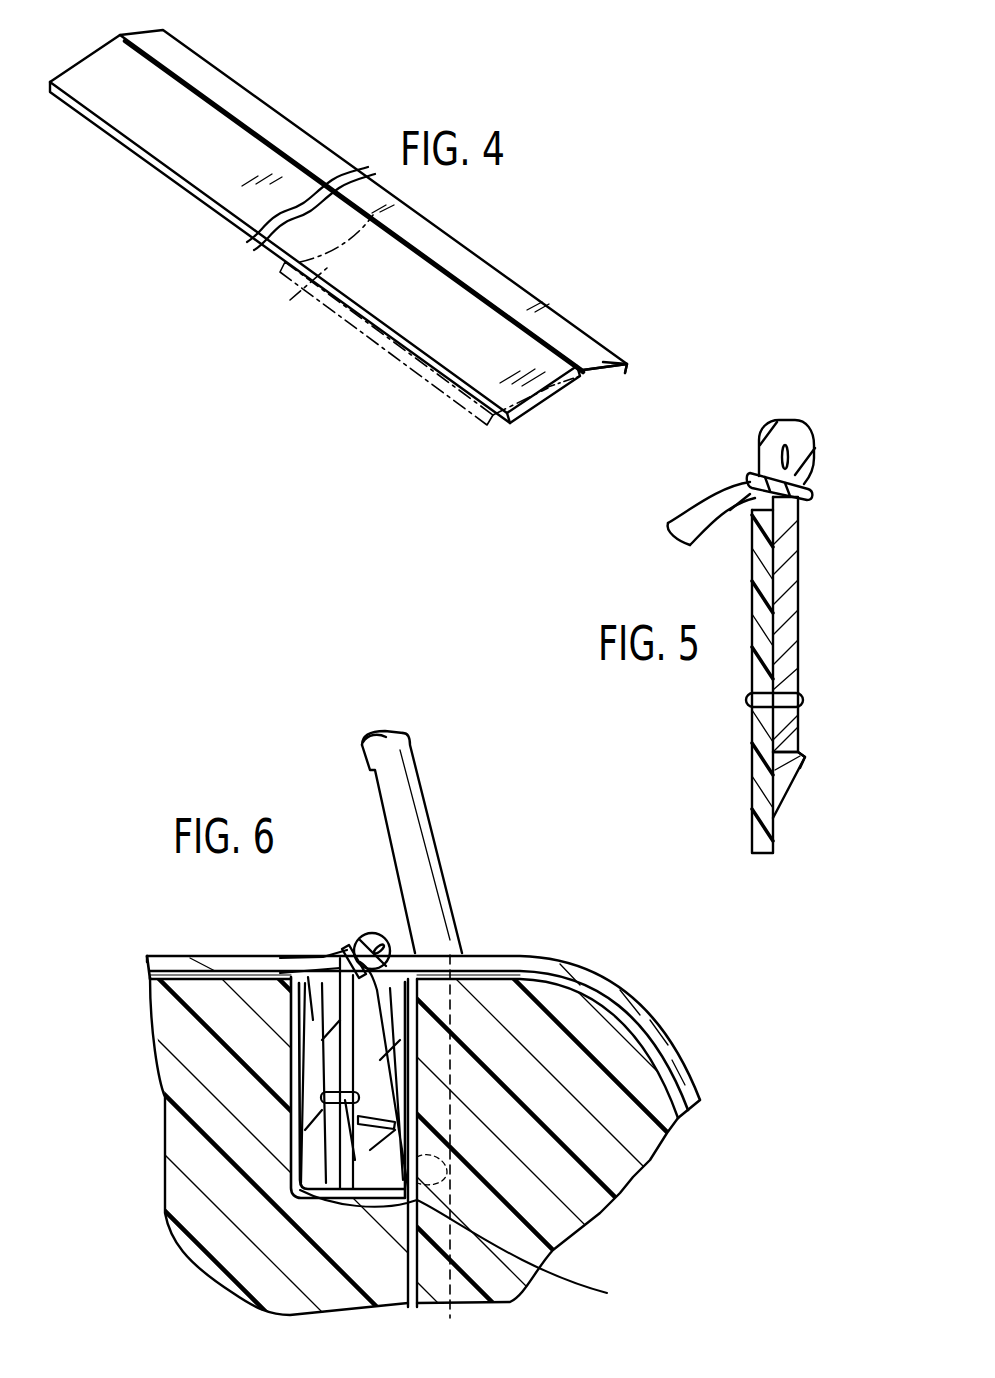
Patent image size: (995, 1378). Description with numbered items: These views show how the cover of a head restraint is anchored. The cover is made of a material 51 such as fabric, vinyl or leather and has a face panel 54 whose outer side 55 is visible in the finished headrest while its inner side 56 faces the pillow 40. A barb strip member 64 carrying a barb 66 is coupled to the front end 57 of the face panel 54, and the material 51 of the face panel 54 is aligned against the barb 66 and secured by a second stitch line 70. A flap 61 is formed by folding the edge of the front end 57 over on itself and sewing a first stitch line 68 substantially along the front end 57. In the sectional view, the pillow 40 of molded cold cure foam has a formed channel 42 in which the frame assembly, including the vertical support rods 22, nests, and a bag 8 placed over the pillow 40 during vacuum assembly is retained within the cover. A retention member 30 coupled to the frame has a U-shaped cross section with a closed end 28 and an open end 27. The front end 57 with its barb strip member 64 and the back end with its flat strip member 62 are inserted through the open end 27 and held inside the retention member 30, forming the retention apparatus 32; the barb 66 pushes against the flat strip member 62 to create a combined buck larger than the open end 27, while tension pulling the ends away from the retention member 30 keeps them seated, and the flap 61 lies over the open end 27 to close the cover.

In FIG. 6, the bag 8 is at (172, 962).
In FIG. 6, the vertical support rods 22 is at (437, 840).
In FIG. 6, the open end 27 is at (297, 990).
In FIG. 6, the closed end 28 is at (357, 1209).
In FIG. 6, the retention member 30 is at (298, 1170).
In FIG. 6, the retention apparatus 32 is at (313, 941).
In FIG. 6, the pillow 40 is at (150, 1050).
In FIG. 6, the formed channel 42 is at (438, 1149).
In FIG. 4, the material 51 is at (416, 380).
In FIG. 5, the material 51 is at (800, 620).
In FIG. 5, the face panel 54 is at (800, 568).
In FIG. 6, the face panel 54 is at (187, 972).
In FIG. 5, the outer side 55 is at (806, 665).
In FIG. 6, the outer side 55 is at (252, 953).
In FIG. 5, the inner side 56 is at (725, 545).
In FIG. 4, the front end 57 is at (580, 400).
In FIG. 5, the front end 57 is at (805, 735).
In FIG. 5, the flap 61 is at (812, 430).
In FIG. 6, the flap 61 is at (383, 933).
In FIG. 6, the flat strip member 62 is at (468, 1249).
In FIG. 4, the barb strip member 64 is at (503, 275).
In FIG. 5, the barb strip member 64 is at (750, 742).
In FIG. 6, the barb strip member 64 is at (300, 1190).
In FIG. 4, the barb 66 is at (613, 372).
In FIG. 5, the barb 66 is at (805, 762).
In FIG. 5, the first stitch line 68 is at (808, 495).
In FIG. 6, the first stitch line 68 is at (347, 940).
In FIG. 5, the second stitch line 70 is at (803, 700).
In FIG. 6, the second stitch line 70 is at (358, 1110).